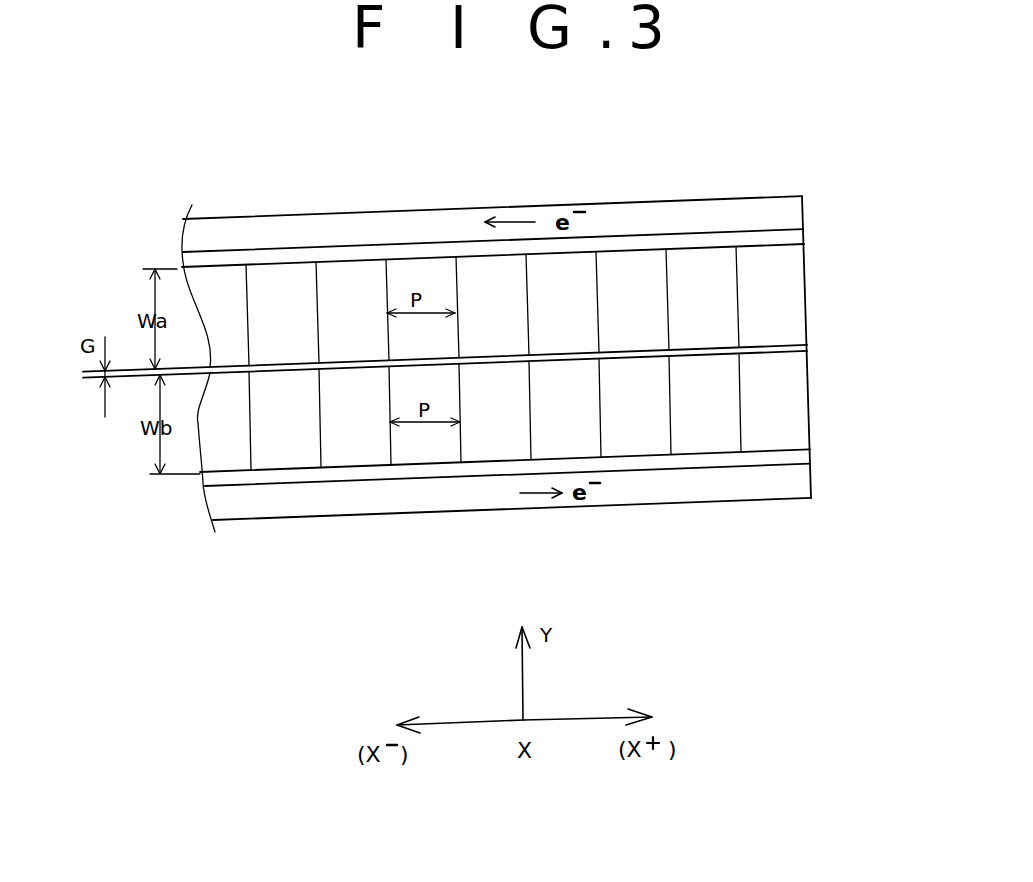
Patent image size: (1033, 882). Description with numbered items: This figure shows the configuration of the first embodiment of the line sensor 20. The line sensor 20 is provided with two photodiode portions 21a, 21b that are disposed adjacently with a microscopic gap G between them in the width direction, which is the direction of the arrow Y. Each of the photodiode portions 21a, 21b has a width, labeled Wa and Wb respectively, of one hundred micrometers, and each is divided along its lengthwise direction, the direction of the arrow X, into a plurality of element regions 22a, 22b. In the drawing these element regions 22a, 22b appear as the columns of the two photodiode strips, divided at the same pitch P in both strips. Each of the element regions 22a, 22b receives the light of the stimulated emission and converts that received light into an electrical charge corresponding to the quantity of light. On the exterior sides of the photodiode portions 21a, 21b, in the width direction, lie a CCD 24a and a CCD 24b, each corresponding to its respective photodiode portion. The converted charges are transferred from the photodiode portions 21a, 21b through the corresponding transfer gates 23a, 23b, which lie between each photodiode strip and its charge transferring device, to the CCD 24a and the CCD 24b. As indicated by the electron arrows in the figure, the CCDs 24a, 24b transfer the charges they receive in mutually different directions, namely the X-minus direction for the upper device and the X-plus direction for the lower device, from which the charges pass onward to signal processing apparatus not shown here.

The line sensor 20 is at (703, 157).
The photodiode portion 21a is at (807, 325).
The photodiode portion 21b is at (808, 370).
The element regions 22a is at (790, 305).
The element regions 22b is at (792, 410).
The transfer gate 23a is at (797, 240).
The transfer gate 23b is at (808, 455).
The CCD 24a is at (795, 214).
The CCD 24b is at (807, 485).